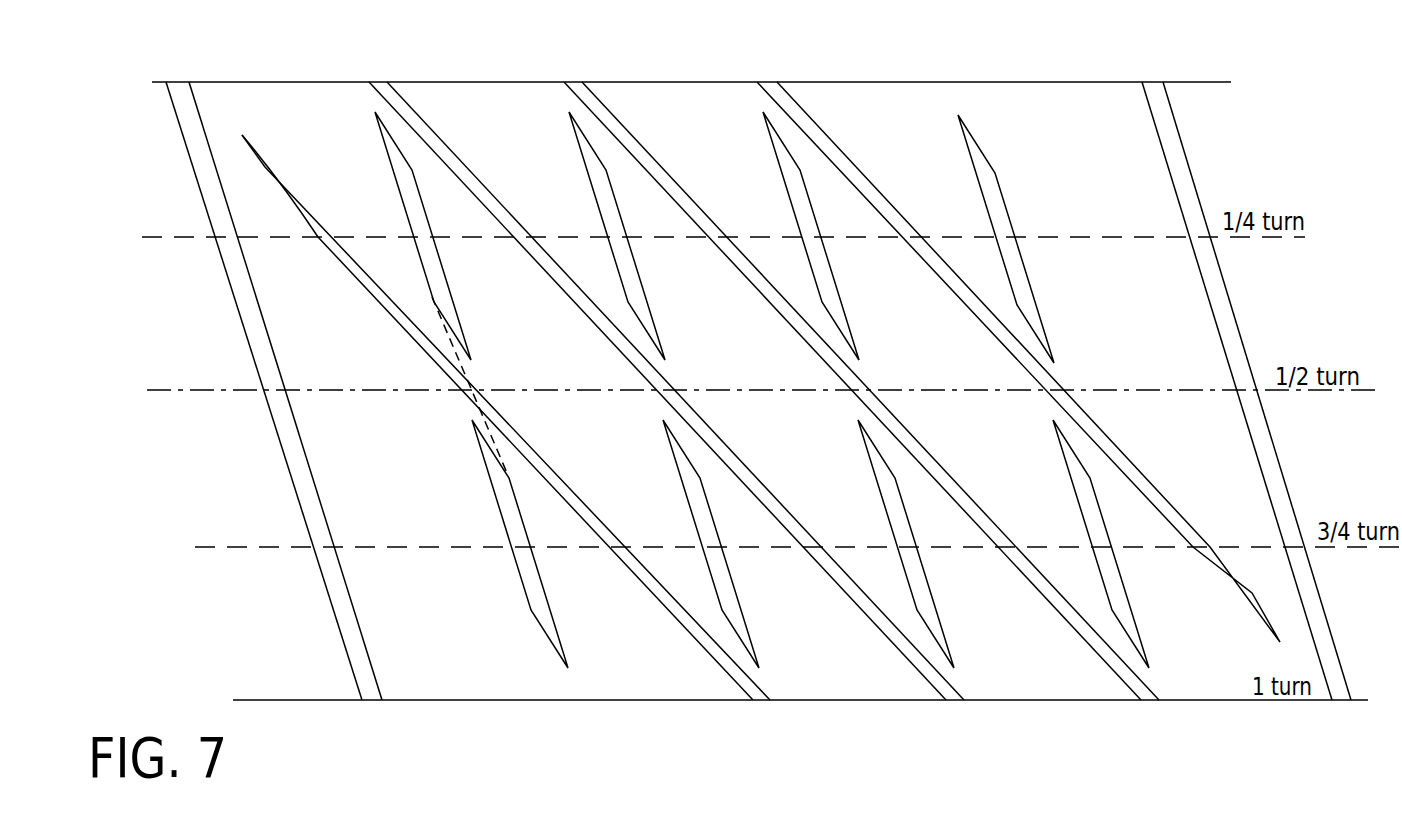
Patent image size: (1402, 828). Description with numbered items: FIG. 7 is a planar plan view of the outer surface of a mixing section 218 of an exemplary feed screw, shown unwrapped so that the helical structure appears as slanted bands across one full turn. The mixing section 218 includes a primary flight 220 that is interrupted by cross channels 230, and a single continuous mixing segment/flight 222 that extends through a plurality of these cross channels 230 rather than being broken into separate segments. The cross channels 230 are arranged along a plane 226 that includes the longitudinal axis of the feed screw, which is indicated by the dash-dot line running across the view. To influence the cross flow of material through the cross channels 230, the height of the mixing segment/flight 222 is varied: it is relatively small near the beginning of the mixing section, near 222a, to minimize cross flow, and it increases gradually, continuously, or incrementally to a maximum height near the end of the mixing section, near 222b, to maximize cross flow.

The mixing section 218 is at (677, 62).
The mixing segment/flight 222 is at (442, 145).
The beginning of mixing segment/flight 222a is at (266, 166).
The end of mixing segment/flight 222b is at (1068, 398).
The primary flight 220 is at (428, 255).
The plane 226 is at (245, 388).
The cross channels 230 is at (473, 412).